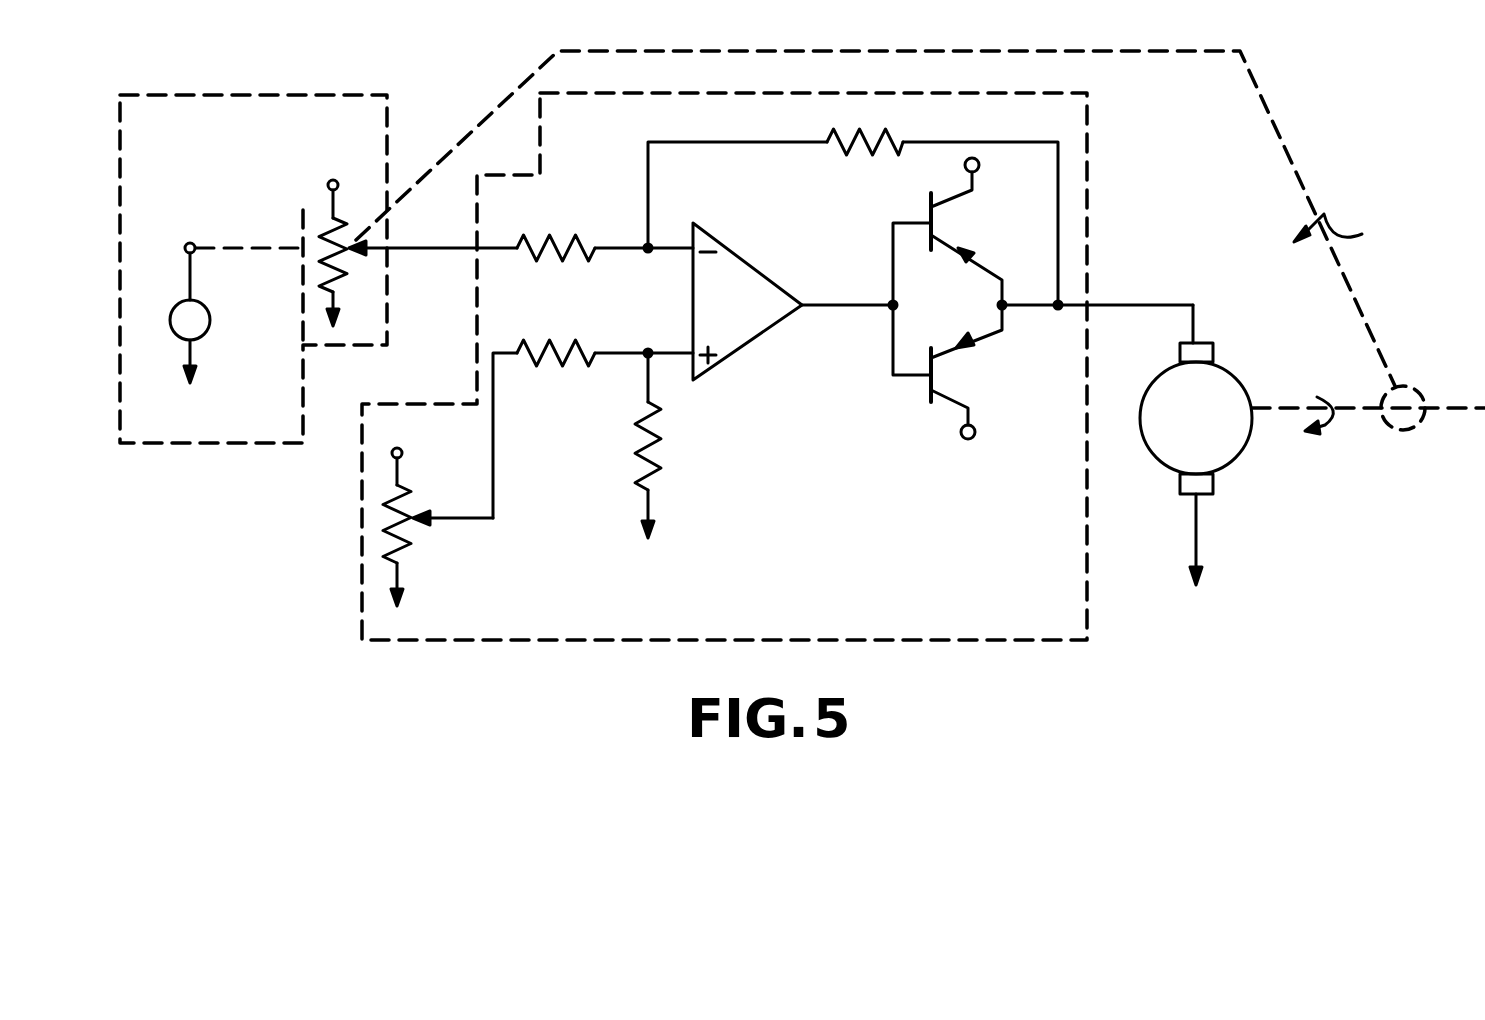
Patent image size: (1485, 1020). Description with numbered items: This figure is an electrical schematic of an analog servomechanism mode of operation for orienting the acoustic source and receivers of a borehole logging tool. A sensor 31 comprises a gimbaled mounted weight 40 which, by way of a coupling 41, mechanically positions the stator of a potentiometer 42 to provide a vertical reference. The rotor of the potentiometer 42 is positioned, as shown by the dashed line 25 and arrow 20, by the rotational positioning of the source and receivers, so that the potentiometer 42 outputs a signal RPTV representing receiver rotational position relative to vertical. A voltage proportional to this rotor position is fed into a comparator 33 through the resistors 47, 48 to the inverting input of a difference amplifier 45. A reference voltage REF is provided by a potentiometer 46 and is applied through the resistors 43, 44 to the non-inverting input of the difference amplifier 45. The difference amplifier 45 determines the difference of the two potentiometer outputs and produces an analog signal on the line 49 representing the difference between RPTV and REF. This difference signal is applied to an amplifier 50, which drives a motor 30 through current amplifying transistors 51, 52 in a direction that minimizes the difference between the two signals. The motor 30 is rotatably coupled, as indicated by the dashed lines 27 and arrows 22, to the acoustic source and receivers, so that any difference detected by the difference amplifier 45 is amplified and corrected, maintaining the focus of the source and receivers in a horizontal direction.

The arrow 20 is at (1345, 228).
The arrows 22 is at (1328, 405).
The dashed line 25 is at (1296, 165).
The dashed lines 27 is at (1287, 407).
The motor 30 is at (1232, 463).
The sensor 31 is at (258, 95).
The comparator 33 is at (1090, 188).
The gimbaled mounted weight 40 is at (210, 330).
The coupling 41 is at (242, 247).
The potentiometer 42 is at (330, 230).
The resistor 43 is at (565, 370).
The resistor 44 is at (660, 435).
The difference amplifier 45 is at (727, 250).
The potentiometer 46 is at (410, 492).
The resistor 47 is at (563, 258).
The resistor 48 is at (845, 163).
The line 49 is at (862, 300).
The amplifier 50 is at (958, 316).
The current amplifying transistor 51 is at (945, 212).
The current amplifying transistor 52 is at (945, 395).